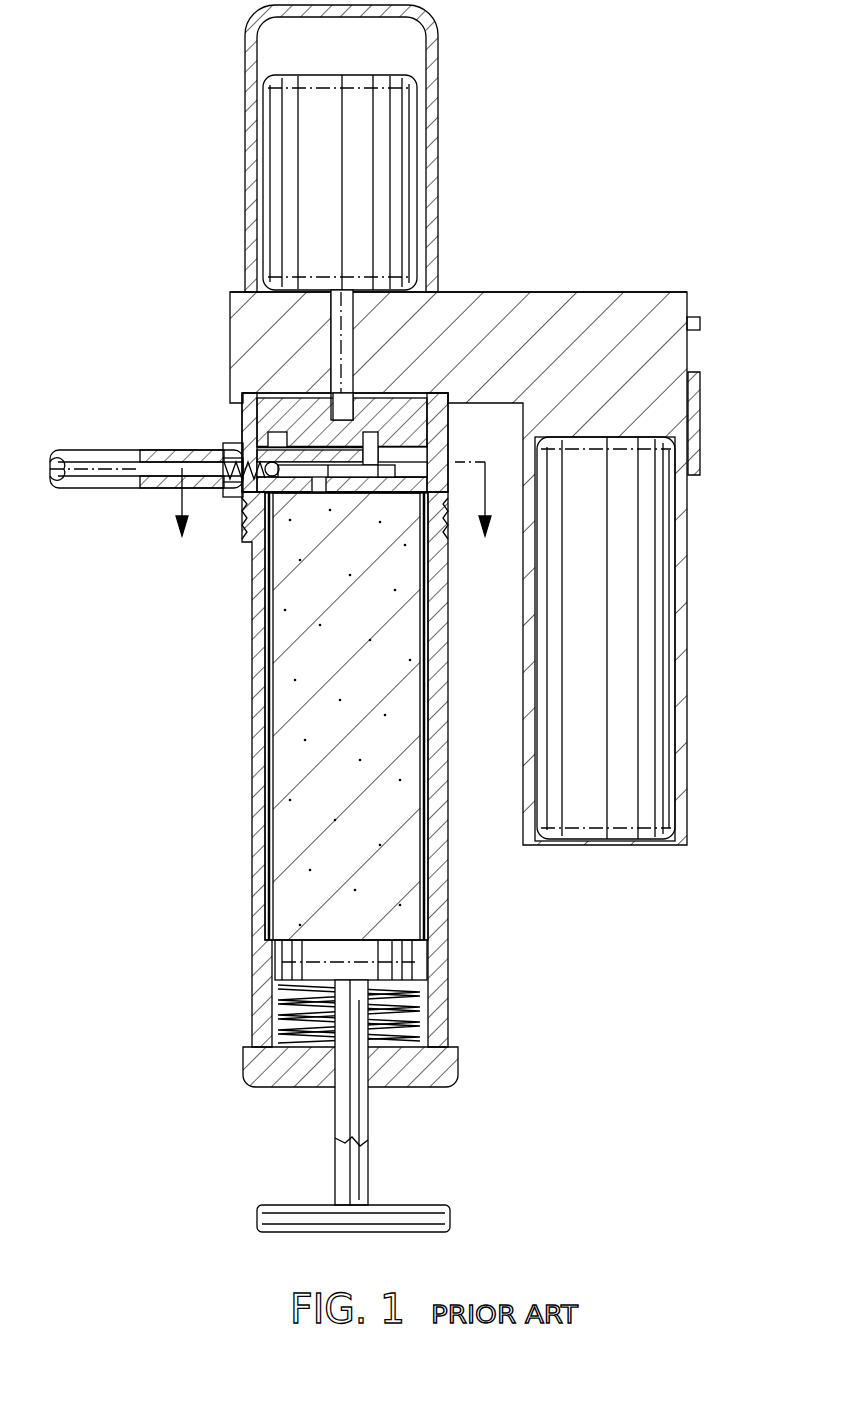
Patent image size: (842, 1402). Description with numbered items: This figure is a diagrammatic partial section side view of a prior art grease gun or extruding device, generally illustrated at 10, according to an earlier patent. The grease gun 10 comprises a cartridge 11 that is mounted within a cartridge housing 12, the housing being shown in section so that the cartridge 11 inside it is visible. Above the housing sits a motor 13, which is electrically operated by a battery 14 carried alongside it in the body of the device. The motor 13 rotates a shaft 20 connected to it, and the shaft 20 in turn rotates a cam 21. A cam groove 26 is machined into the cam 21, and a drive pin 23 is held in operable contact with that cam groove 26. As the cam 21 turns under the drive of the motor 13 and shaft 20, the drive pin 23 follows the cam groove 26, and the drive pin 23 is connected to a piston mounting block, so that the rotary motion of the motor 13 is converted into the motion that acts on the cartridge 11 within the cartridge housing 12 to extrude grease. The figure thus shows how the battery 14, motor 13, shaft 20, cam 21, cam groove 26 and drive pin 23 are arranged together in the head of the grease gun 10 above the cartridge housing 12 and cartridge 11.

The grease gun 10 is at (203, 708).
The cartridge 11 is at (412, 622).
The cartridge housing 12 is at (257, 778).
The motor 13 is at (320, 117).
The battery 14 is at (620, 612).
The shaft 20 is at (326, 408).
The cam 21 is at (414, 398).
The drive pin 23 is at (428, 443).
The cam groove 26 is at (436, 436).